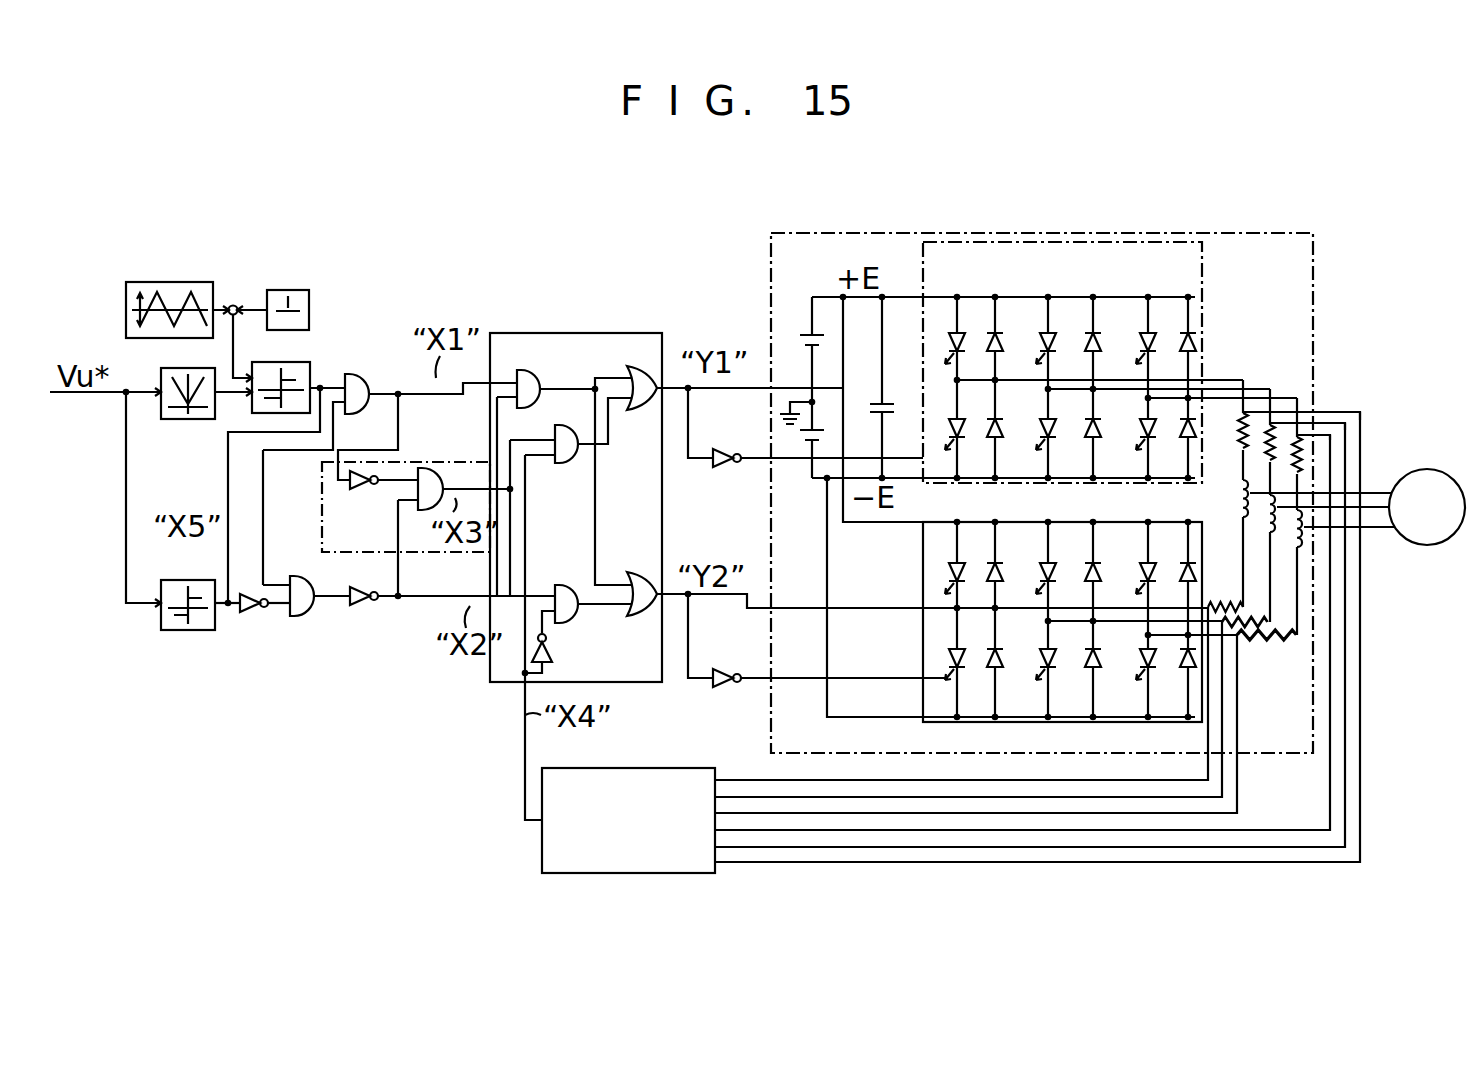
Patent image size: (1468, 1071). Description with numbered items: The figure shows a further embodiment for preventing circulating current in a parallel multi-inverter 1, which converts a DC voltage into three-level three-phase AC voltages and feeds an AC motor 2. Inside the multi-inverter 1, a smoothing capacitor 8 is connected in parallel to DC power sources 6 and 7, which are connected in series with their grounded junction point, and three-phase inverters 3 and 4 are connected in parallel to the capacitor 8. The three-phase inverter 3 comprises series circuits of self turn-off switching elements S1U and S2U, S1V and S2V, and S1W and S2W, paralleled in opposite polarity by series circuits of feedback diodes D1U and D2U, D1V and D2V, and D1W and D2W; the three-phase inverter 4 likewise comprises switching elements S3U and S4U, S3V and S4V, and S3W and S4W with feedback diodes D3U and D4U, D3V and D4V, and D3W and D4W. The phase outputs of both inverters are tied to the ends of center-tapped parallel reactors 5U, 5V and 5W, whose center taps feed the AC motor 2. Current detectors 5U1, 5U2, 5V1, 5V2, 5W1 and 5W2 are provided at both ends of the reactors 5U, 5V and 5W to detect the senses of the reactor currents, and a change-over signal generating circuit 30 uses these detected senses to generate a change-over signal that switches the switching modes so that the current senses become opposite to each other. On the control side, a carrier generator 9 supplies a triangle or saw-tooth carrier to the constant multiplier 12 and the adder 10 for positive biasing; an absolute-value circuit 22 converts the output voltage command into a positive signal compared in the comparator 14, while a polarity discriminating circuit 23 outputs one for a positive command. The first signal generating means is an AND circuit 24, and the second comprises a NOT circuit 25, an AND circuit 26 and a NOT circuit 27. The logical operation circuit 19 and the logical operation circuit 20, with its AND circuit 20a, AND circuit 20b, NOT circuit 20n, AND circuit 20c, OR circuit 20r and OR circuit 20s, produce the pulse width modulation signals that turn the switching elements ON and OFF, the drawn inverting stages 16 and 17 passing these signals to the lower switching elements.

The parallel multi-inverter 1 is at (1183, 233).
The AC motor 2 is at (1438, 544).
The three-phase inverter 3 is at (1203, 252).
The three-phase inverter 4 is at (927, 722).
The parallel reactor 5U is at (1242, 486).
The parallel reactor 5V is at (1278, 480).
The parallel reactor 5W is at (1302, 539).
The current detector 5U1 is at (1345, 410).
The current detector 5V1 is at (1356, 423).
The current detector 5W1 is at (1344, 436).
The current detector 5U2 is at (1223, 608).
The current detector 5V2 is at (1233, 624).
The current detector 5W2 is at (1260, 648).
The DC power source 6 is at (802, 335).
The DC power source 7 is at (799, 442).
The smoothing capacitor 8 is at (878, 412).
The carrier generator 9 is at (180, 282).
The adder 10 is at (233, 302).
The constant multiplier 12 is at (301, 290).
The comparator 14 is at (304, 364).
The inverter (NOT) 16 is at (735, 470).
The inverter (NOT) 17 is at (735, 690).
The logical operation circuit 19 is at (444, 462).
The logical operation circuit 20 is at (598, 536).
The AND circuit 20a is at (527, 368).
The AND circuit 20b is at (565, 466).
The AND circuit 20c is at (563, 586).
The NOT circuit 20n is at (554, 648).
The OR circuit 20r is at (642, 366).
The OR circuit 20s is at (634, 572).
The absolute-value circuit 22 is at (185, 419).
The polarity discriminating circuit 23 is at (172, 632).
The AND circuit 24 is at (358, 378).
The NOT circuit 25 is at (250, 615).
The AND circuit 26 is at (300, 618).
The NOT circuit 27 is at (365, 608).
The change-over signal generating circuit 30 is at (659, 768).
The self turn-off type switching element S1U is at (952, 336).
The feedback diode D1U is at (986, 324).
The self turn-off type switching element S1V is at (1040, 324).
The feedback diode D1V is at (1088, 324).
The self turn-off type switching element S1W is at (1140, 324).
The feedback diode D1W is at (1195, 334).
The self turn-off type switching element S2U is at (955, 428).
The feedback diode D2U is at (990, 444).
The self turn-off type switching element S2V is at (1035, 450).
The feedback diode D2V is at (1088, 454).
The self turn-off type switching element S2W is at (1144, 454).
The feedback diode D2W is at (1194, 420).
The self turn-off type switching element S3U is at (944, 582).
The feedback diode D3U is at (980, 583).
The self turn-off type switching element S3V is at (1036, 558).
The feedback diode D3V is at (1088, 588).
The self turn-off type switching element S3W is at (1158, 572).
The feedback diode D3W is at (1193, 596).
The self turn-off type switching element S4U is at (942, 660).
The feedback diode D4U is at (986, 646).
The self turn-off type switching element S4V is at (1038, 666).
The feedback diode D4V is at (1095, 674).
The self turn-off type switching element S4W is at (1135, 696).
The feedback diode D4W is at (1193, 666).